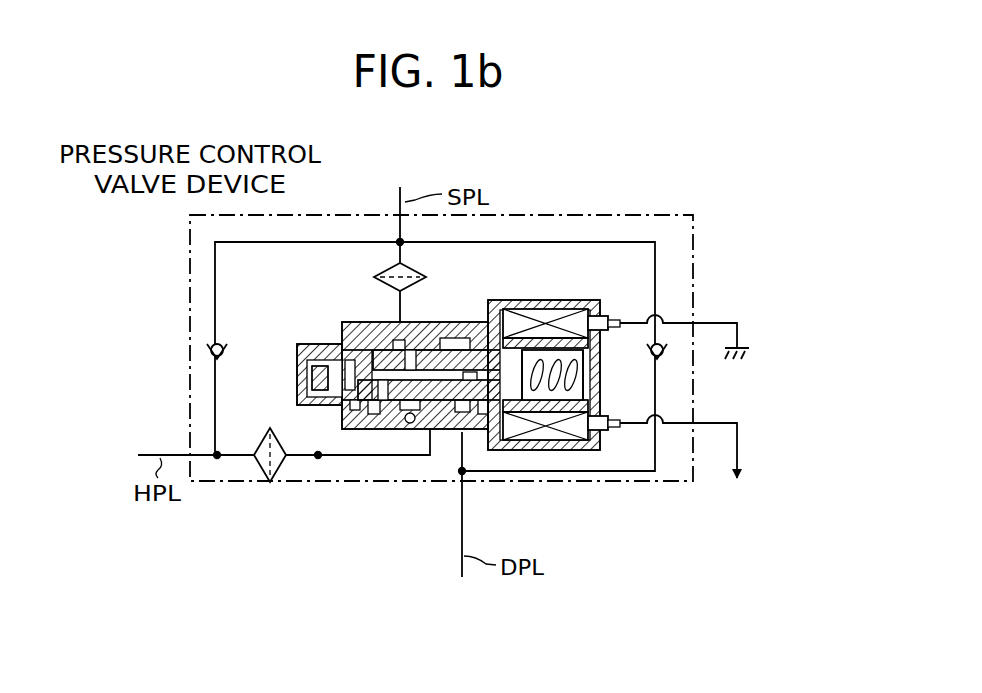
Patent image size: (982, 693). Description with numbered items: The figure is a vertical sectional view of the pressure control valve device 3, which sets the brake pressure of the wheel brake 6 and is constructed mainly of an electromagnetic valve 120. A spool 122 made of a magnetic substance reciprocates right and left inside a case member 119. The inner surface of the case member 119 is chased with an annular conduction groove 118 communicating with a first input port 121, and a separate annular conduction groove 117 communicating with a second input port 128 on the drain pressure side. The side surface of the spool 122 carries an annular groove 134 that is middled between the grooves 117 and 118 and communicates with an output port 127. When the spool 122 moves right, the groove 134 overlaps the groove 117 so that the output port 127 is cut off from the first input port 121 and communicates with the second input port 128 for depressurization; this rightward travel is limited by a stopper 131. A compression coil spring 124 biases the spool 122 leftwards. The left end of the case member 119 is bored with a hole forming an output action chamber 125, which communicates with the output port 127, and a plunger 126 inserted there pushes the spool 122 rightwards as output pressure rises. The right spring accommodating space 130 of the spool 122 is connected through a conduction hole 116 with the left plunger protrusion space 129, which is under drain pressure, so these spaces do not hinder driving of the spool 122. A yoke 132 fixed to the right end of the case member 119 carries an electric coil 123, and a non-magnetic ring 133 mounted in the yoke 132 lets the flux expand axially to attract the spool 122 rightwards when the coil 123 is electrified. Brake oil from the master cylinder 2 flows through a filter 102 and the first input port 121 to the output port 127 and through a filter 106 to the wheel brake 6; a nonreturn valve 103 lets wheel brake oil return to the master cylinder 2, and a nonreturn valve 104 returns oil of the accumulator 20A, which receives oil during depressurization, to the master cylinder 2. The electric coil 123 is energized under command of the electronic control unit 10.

The master cylinder 2 is at (391, 185).
The pressure control valve device 3 is at (180, 228).
The wheel brake 6 is at (115, 468).
The electronic control unit 10 is at (751, 512).
The accumulator 20A is at (487, 610).
The filter 102 is at (376, 270).
The nonreturn valve 103 is at (207, 345).
The nonreturn valve 104 is at (664, 343).
The filter 106 is at (262, 472).
The conduction hole 116 is at (434, 352).
The annular conduction groove 117 is at (500, 432).
The annular conduction groove 118 is at (407, 430).
The case member 119 is at (346, 333).
The electromagnetic valve 120 is at (330, 318).
The first input port 121 is at (393, 327).
The spool 122 is at (382, 430).
The electric coil 123 is at (582, 447).
The compression coil spring 124 is at (583, 395).
The output action chamber 125 is at (322, 380).
The plunger 126 is at (331, 430).
The output port 127 is at (437, 430).
The second input port 128 is at (463, 432).
The plunger protrusion space 129 is at (357, 430).
The spring accommodating space 130 is at (538, 312).
The stopper 131 is at (583, 353).
The yoke 132 is at (574, 302).
The non-magnetic ring 133 is at (540, 425).
The annular groove 134 is at (466, 320).